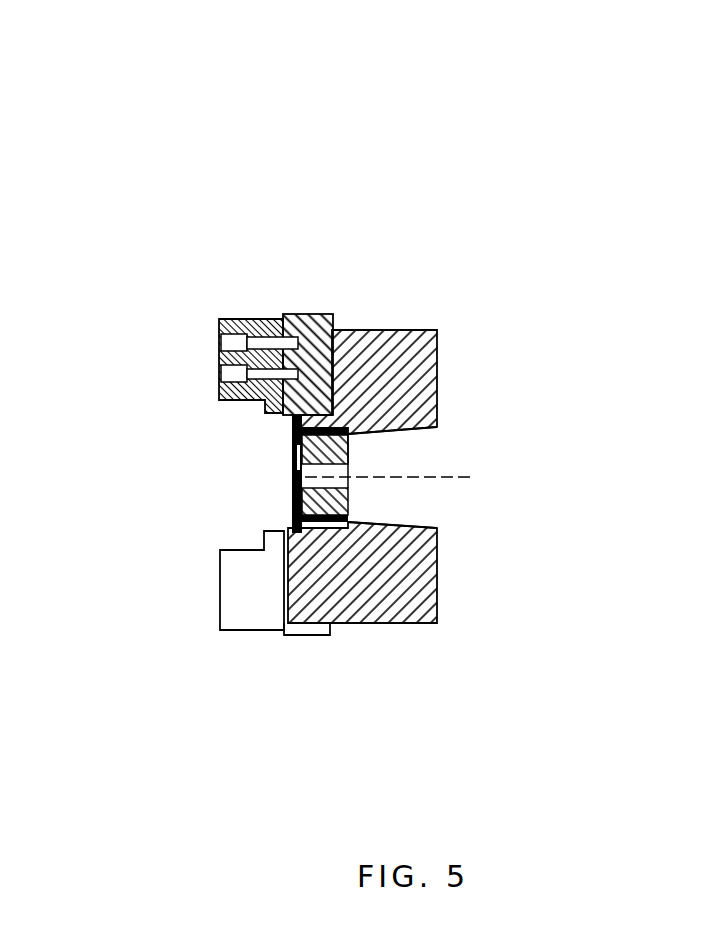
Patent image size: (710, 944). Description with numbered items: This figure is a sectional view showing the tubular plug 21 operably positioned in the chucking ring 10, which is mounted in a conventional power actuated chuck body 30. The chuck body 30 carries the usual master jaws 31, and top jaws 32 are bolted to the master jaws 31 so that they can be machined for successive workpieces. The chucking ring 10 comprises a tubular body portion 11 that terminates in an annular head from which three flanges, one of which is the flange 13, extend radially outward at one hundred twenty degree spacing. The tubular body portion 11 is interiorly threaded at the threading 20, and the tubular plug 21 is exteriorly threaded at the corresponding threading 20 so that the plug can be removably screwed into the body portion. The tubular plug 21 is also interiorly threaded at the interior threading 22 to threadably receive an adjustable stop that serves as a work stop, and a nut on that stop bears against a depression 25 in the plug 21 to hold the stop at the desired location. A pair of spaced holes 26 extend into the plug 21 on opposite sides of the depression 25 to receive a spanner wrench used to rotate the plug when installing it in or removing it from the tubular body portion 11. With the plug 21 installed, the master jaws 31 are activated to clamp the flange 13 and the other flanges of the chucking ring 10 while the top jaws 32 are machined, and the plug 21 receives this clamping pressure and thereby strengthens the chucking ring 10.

The chucking ring 10 is at (282, 512).
The tubular body portion 11 is at (497, 454).
The flange 13 is at (290, 422).
The threading 20 is at (352, 524).
The tubular plug 21 is at (349, 455).
The interior threading 22 is at (333, 470).
The depression 25 is at (291, 482).
The spaced holes 26 is at (291, 447).
The chuck body 30 is at (403, 332).
The master jaws 31 is at (305, 330).
The top jaws 32 is at (248, 335).